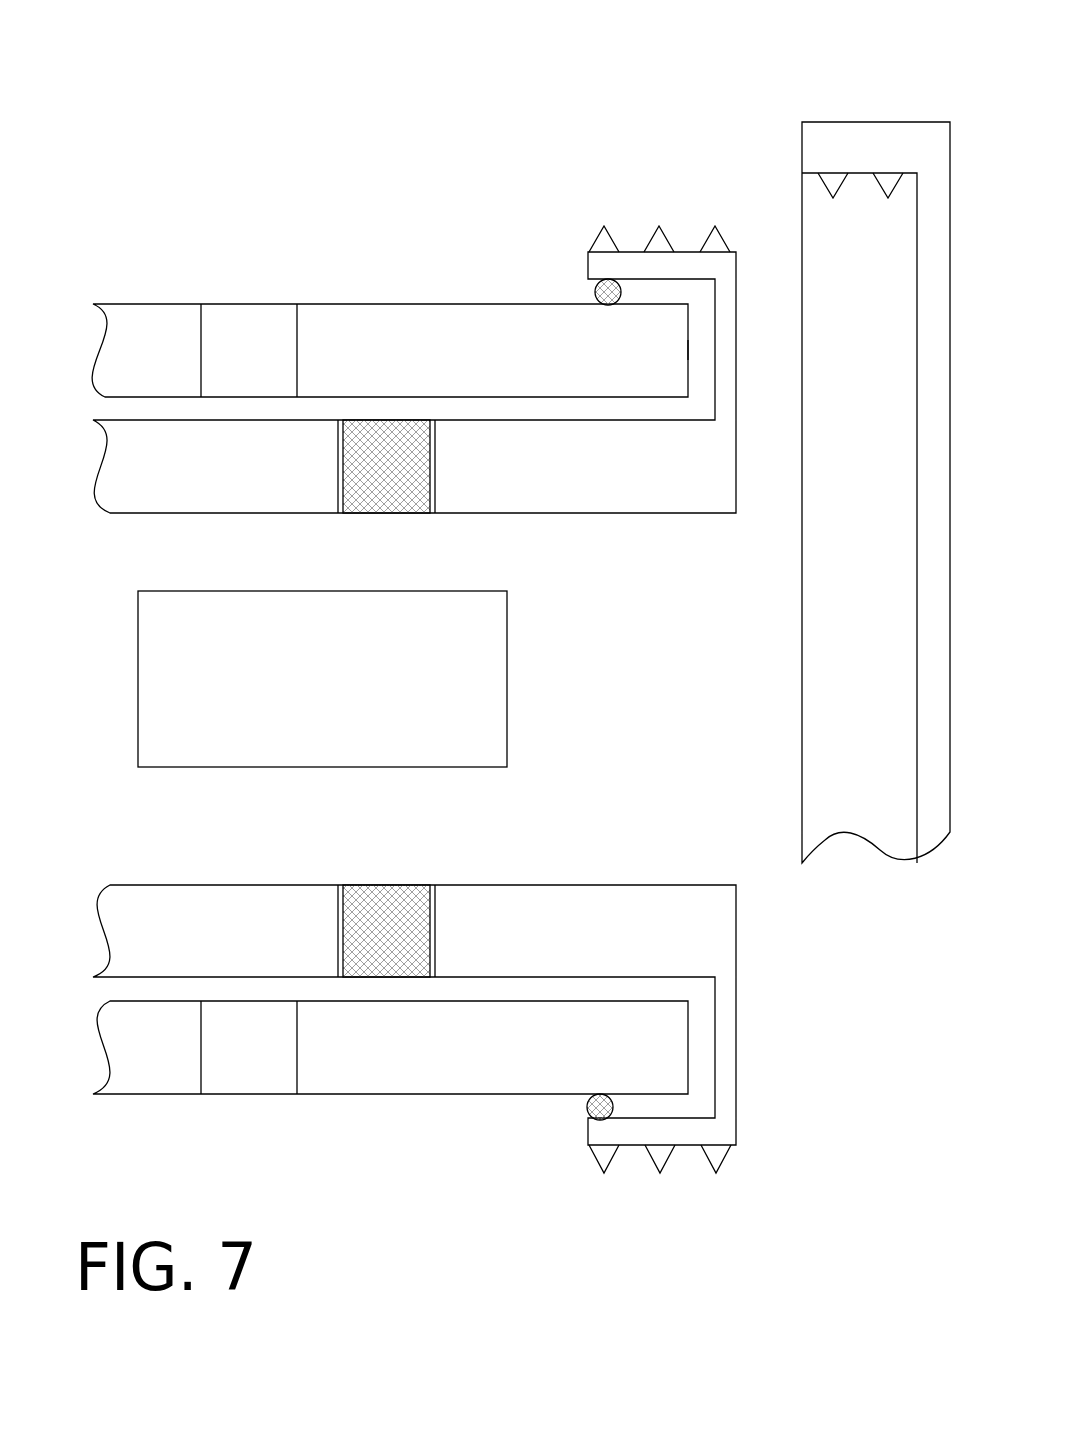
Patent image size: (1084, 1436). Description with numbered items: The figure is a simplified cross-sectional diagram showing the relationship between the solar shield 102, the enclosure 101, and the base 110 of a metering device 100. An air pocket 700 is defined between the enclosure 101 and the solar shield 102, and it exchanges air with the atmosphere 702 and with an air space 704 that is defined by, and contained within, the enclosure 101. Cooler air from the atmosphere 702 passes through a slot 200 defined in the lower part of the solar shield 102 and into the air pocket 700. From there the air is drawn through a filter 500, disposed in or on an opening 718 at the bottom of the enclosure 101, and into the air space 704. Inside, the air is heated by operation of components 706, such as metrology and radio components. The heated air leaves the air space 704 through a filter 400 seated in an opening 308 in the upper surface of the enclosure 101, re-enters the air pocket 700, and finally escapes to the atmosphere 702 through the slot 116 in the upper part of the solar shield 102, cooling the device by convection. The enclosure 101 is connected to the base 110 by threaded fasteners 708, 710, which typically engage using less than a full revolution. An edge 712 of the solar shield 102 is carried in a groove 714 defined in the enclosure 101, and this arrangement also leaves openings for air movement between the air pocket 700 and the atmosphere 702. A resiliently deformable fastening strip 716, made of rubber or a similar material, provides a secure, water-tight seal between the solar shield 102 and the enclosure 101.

The metering device 100 is at (745, 87).
The enclosure 101 is at (633, 513).
The solar shield 102 is at (433, 1118).
The base 110 is at (802, 767).
The slot 116 is at (250, 304).
The slot 200 is at (378, 1264).
The opening 308 is at (338, 480).
The filter 400 is at (387, 420).
The filter 500 is at (385, 885).
The air pocket 700 is at (532, 990).
The atmosphere 702 is at (635, 1294).
The air space 704 is at (680, 698).
The components 706 is at (346, 691).
The threaded fastener 708 is at (648, 245).
The threaded fastener 710 is at (823, 187).
The edge 712 is at (687, 350).
The groove 714 is at (703, 375).
The fastening strip 716 is at (608, 1105).
The opening 718 is at (337, 950).